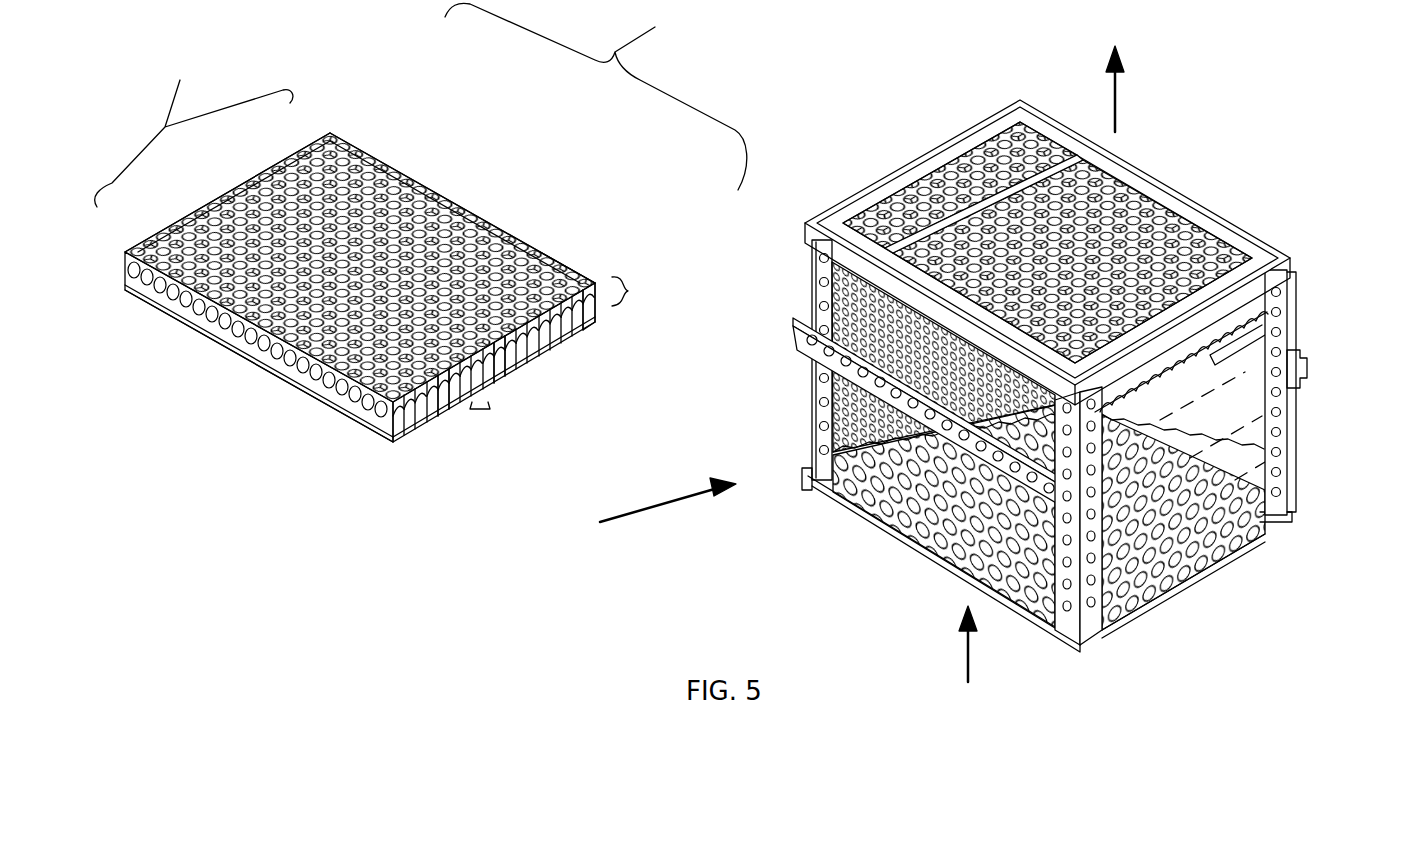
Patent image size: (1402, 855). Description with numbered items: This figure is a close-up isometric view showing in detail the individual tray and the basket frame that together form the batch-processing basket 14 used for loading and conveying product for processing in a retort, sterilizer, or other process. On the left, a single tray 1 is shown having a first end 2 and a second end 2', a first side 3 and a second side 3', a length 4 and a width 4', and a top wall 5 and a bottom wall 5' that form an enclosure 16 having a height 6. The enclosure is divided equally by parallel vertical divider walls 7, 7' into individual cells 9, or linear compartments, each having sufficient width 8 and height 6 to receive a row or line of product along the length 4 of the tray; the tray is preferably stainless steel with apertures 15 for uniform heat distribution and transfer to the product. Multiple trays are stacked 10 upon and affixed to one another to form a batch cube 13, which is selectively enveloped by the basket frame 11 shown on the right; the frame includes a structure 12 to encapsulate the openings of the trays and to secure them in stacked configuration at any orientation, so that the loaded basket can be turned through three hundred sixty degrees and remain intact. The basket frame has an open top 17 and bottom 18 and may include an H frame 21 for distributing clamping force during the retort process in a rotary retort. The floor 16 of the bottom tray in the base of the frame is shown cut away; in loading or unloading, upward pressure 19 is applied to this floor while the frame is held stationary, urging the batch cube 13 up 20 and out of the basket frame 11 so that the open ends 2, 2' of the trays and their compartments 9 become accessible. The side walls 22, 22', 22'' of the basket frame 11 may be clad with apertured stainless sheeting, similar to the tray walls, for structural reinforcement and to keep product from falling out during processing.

The tray 1 is at (423, 185).
The first end 2 is at (494, 399).
The second end 2' is at (227, 192).
The first side 3 is at (259, 355).
The second side 3' is at (462, 183).
The length 4 is at (596, 96).
The width 4' is at (194, 127).
The top wall 5 is at (359, 212).
The bottom wall 5' is at (259, 413).
The height 6 is at (626, 299).
The divider wall 7 is at (455, 428).
The divider wall 7' is at (621, 328).
The width 8 is at (482, 412).
The cell 9 is at (505, 368).
The stacked 10 is at (642, 492).
The basket frame 11 is at (925, 578).
The structure 12 is at (818, 402).
The batch cube 13 is at (1224, 393).
The batch-processing basket 14 is at (815, 280).
The aperture 15 is at (578, 251).
The enclosure 16 is at (882, 508).
The open top 17 is at (895, 182).
The bottom 18 is at (822, 506).
The upward pressure 19 is at (968, 660).
The up 20 is at (1122, 108).
The H frame 21 is at (990, 108).
The side wall 22 is at (914, 124).
The side wall 22' is at (1034, 630).
The side wall 22'' is at (1299, 242).